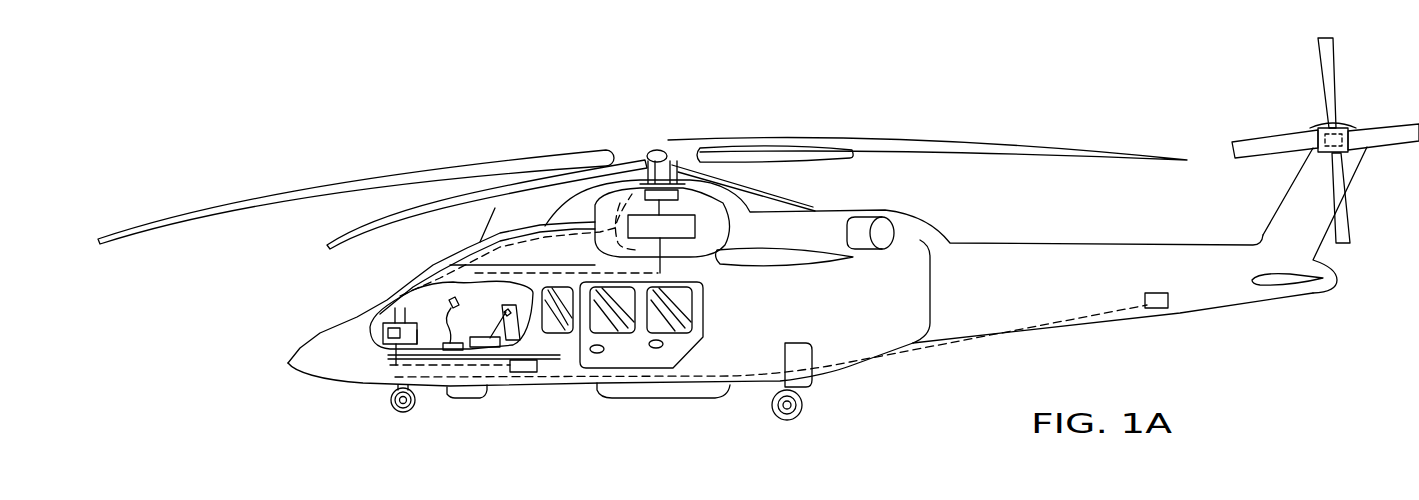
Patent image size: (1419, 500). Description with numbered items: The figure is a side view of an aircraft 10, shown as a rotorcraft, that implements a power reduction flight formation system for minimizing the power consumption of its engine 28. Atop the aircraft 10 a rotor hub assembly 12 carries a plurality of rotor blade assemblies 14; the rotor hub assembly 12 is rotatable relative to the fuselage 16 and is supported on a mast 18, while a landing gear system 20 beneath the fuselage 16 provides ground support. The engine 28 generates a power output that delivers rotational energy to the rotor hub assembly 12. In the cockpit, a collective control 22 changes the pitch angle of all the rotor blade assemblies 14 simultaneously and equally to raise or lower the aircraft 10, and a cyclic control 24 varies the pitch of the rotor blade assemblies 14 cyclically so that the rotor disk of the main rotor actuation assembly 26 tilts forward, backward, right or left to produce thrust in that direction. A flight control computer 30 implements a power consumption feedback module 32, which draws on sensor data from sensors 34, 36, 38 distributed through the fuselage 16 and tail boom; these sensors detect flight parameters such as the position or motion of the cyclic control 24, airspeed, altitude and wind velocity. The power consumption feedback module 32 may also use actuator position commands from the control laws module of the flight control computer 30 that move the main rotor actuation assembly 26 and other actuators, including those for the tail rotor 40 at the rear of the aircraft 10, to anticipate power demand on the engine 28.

The aircraft 10 is at (518, 137).
The rotor hub assembly 12 is at (652, 148).
The rotor blade assemblies 14 is at (972, 139).
The fuselage 16 is at (582, 384).
The mast 18 is at (723, 226).
The landing gear system 20 is at (806, 406).
The collective control 22 is at (462, 296).
The cyclic control 24 is at (443, 308).
The main rotor actuation assembly 26 is at (708, 186).
The engine 28 is at (712, 262).
The flight control computer 30 is at (418, 334).
The power consumption feedback module 32 is at (383, 333).
The sensor 34 is at (453, 350).
The sensor 36 is at (545, 367).
The sensor 38 is at (1163, 293).
The tail rotor 40 is at (1307, 116).